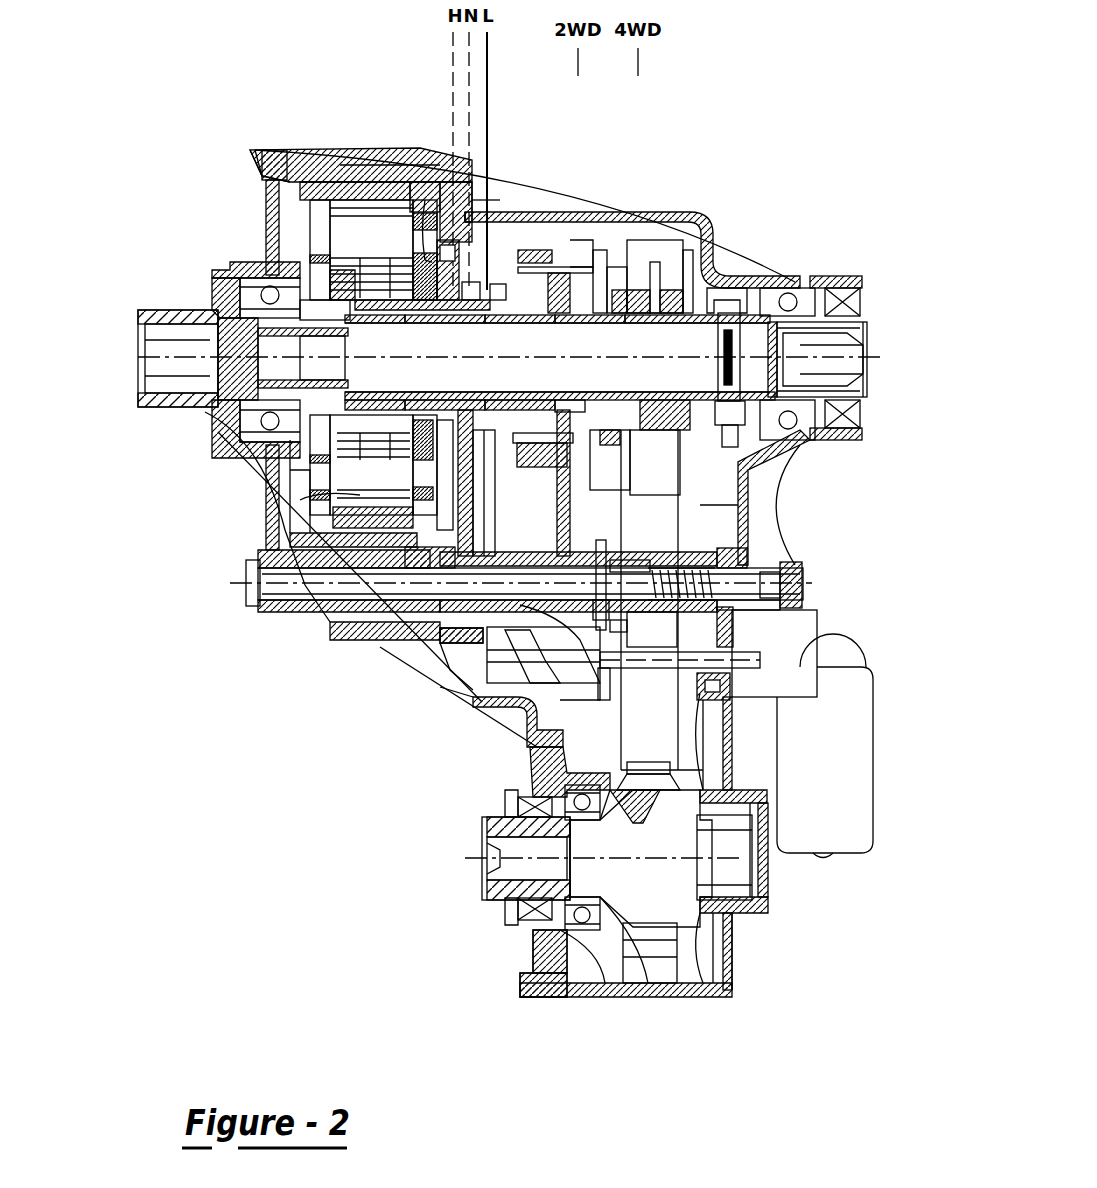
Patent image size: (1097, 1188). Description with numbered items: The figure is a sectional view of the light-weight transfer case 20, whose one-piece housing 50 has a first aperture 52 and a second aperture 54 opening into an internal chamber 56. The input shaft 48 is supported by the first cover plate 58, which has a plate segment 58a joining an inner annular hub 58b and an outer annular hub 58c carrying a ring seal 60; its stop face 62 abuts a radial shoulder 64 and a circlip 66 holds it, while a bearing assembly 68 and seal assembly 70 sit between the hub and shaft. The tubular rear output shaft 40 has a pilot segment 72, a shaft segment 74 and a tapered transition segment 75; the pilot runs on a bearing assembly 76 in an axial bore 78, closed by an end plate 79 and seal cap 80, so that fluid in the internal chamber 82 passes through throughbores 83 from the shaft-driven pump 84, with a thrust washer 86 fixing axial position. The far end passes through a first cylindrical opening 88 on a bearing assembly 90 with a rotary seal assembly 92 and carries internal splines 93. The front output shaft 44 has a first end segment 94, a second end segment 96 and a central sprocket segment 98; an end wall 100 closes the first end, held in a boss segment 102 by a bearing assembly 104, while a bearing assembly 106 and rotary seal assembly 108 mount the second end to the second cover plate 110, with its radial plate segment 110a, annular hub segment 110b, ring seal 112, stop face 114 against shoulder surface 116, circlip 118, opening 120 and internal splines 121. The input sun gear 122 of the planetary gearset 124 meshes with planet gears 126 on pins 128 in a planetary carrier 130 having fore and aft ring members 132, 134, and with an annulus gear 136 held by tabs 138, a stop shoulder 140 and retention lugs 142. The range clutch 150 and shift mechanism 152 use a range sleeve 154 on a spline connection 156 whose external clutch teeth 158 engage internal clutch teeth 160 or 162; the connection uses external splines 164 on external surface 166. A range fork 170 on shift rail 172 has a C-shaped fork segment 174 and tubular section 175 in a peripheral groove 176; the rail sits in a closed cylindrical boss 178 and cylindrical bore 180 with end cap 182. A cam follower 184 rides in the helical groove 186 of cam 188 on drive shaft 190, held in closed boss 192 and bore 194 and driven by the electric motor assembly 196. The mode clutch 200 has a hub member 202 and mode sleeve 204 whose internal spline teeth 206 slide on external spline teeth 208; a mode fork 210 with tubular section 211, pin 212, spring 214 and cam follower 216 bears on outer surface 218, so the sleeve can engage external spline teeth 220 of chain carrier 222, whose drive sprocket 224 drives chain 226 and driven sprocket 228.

The light-weight transfer case 20 is at (688, 152).
The rear output shaft 40 is at (668, 310).
The front output shaft 44 is at (718, 990).
The input shaft 48 is at (165, 408).
The one-piece housing 50 is at (570, 212).
The first aperture 52 is at (250, 556).
The second aperture 54 is at (510, 980).
The internal chamber 56 is at (694, 543).
The first cover plate 58 is at (258, 468).
The plate segment 58a is at (267, 206).
The inner annular hub 58b is at (267, 240).
The outer annular hub 58c is at (297, 150).
The ring seal 60 is at (278, 150).
The stop face 62 is at (332, 150).
The radial shoulder 64 is at (278, 602).
The circlip 66 is at (262, 170).
The bearing assembly 68 is at (230, 445).
The seal assembly 70 is at (240, 292).
The pilot segment 72 is at (298, 345).
The shaft segment 74 is at (608, 330).
The tapered transition segment 75 is at (362, 392).
The bearing assembly 76 is at (236, 416).
The axial bore 78 is at (240, 308).
The end plate 79 is at (208, 350).
The seal cap 80 is at (208, 374).
The internal chamber 82 is at (475, 351).
The throughbores 83 is at (330, 470).
The shaft-driven pump 84 is at (724, 366).
The thrust washer 86 is at (334, 345).
The first cylindrical opening 88 is at (840, 285).
The bearing assembly 90 is at (790, 288).
The rotary seal assembly 92 is at (808, 440).
The internal splines 93 is at (870, 345).
The first end segment 94 is at (705, 860).
The second end segment 96 is at (498, 826).
The central sprocket segment 98 is at (640, 800).
The end wall 100 is at (772, 898).
The boss segment 102 is at (745, 790).
The bearing assembly 104 is at (745, 935).
The bearing assembly 106 is at (640, 983).
The rotary seal assembly 108 is at (575, 870).
The second cover plate 110 is at (545, 786).
The radial plate segment 110a is at (533, 950).
The annular hub segment 110b is at (600, 790).
The ring seal 112 is at (540, 762).
The stop face 114 is at (576, 983).
The shoulder surface 116 is at (560, 997).
The circlip 118 is at (520, 993).
The opening 120 is at (482, 858).
The internal splines 121 is at (490, 878).
The input sun gear 122 is at (320, 322).
The planetary gearset 124 is at (428, 162).
The planet gears 126 is at (322, 242).
The pin 128 is at (262, 168).
The planetary carrier 130 is at (452, 238).
The fore ring member 132 is at (330, 500).
The aft ring member 134 is at (418, 464).
The annulus gear 136 is at (382, 170).
The radially extending tabs 138 is at (374, 156).
The stop shoulder 140 is at (418, 150).
The retention lugs 142 is at (360, 150).
The range clutch 150 is at (520, 212).
The shift mechanism 152 is at (412, 632).
The range sleeve 154 is at (508, 398).
The spline connection 156 is at (500, 324).
The external clutch teeth 158 is at (410, 324).
The internal clutch teeth 160 is at (362, 264).
The internal clutch teeth 162 is at (448, 400).
The external splines 164 is at (360, 322).
The external surface 166 is at (570, 408).
The range fork 170 is at (480, 558).
The shift rail 172 is at (352, 622).
The C-shaped fork segment 174 is at (478, 458).
The tubular section 175 is at (427, 547).
The peripheral groove 176 is at (488, 412).
The closed cylindrical boss 178 is at (250, 592).
The cylindrical bore 180 is at (800, 568).
The end cap 182 is at (802, 596).
The cam follower 184 is at (482, 702).
The helical groove 186 is at (520, 648).
The cam 188 is at (558, 672).
The drive shaft 190 is at (655, 668).
The closed boss 192 is at (432, 680).
The bore 194 is at (755, 652).
The electric motor assembly 196 is at (833, 648).
The mode clutch 200 is at (646, 236).
The hub member 202 is at (560, 322).
The mode sleeve 204 is at (598, 260).
The internal spline teeth 206 is at (528, 262).
The external spline teeth 208 is at (490, 282).
The mode fork 210 is at (582, 476).
The tubular section 211 is at (640, 562).
The pin 212 is at (604, 550).
The spring 214 is at (690, 608).
The cam follower 216 is at (620, 635).
The outer surface 218 is at (602, 684).
The external spline teeth 220 is at (690, 240).
The chain carrier 222 is at (652, 404).
The drive sprocket 224 is at (648, 448).
The chain 226 is at (757, 505).
The driven sprocket 228 is at (656, 795).